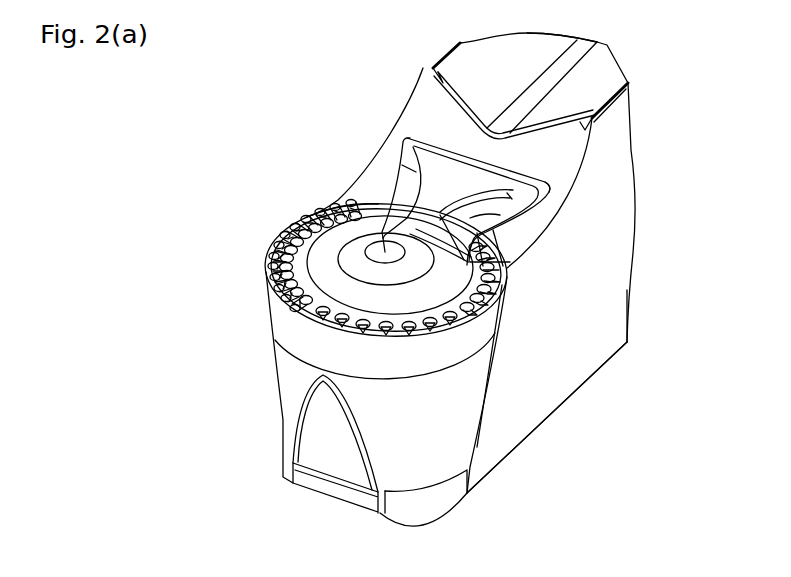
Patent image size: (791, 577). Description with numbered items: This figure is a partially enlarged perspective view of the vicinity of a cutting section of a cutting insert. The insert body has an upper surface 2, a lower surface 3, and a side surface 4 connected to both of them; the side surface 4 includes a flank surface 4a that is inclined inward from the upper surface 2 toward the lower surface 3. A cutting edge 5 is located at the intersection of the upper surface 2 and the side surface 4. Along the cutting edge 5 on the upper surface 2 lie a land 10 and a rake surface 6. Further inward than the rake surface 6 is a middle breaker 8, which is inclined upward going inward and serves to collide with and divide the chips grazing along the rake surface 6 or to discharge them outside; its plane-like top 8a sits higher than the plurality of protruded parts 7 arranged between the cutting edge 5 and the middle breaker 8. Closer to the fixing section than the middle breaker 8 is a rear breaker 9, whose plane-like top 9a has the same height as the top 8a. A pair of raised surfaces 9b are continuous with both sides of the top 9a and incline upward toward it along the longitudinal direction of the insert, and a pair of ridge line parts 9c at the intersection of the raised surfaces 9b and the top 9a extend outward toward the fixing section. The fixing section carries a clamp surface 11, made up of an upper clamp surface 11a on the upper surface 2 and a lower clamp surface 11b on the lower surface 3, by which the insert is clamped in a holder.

The upper surface 2 is at (430, 103).
The lower surface 3 is at (533, 437).
The side surface 4 is at (583, 275).
The flank surface 4a is at (327, 415).
The cutting edge 5 is at (293, 317).
The rake surface 6 is at (267, 295).
The protruded parts 7 is at (267, 272).
The middle breaker 8 is at (321, 259).
The top of middle breaker 8a is at (318, 210).
The rear breaker 9 is at (293, 63).
The top of rear breaker 9a is at (405, 182).
The raised surfaces 9b is at (397, 200).
The ridge line parts 9c is at (403, 195).
The land 10 is at (272, 305).
The clamp surface 11 is at (530, 86).
The upper clamp surface 11a is at (603, 73).
The lower clamp surface 11b is at (612, 360).